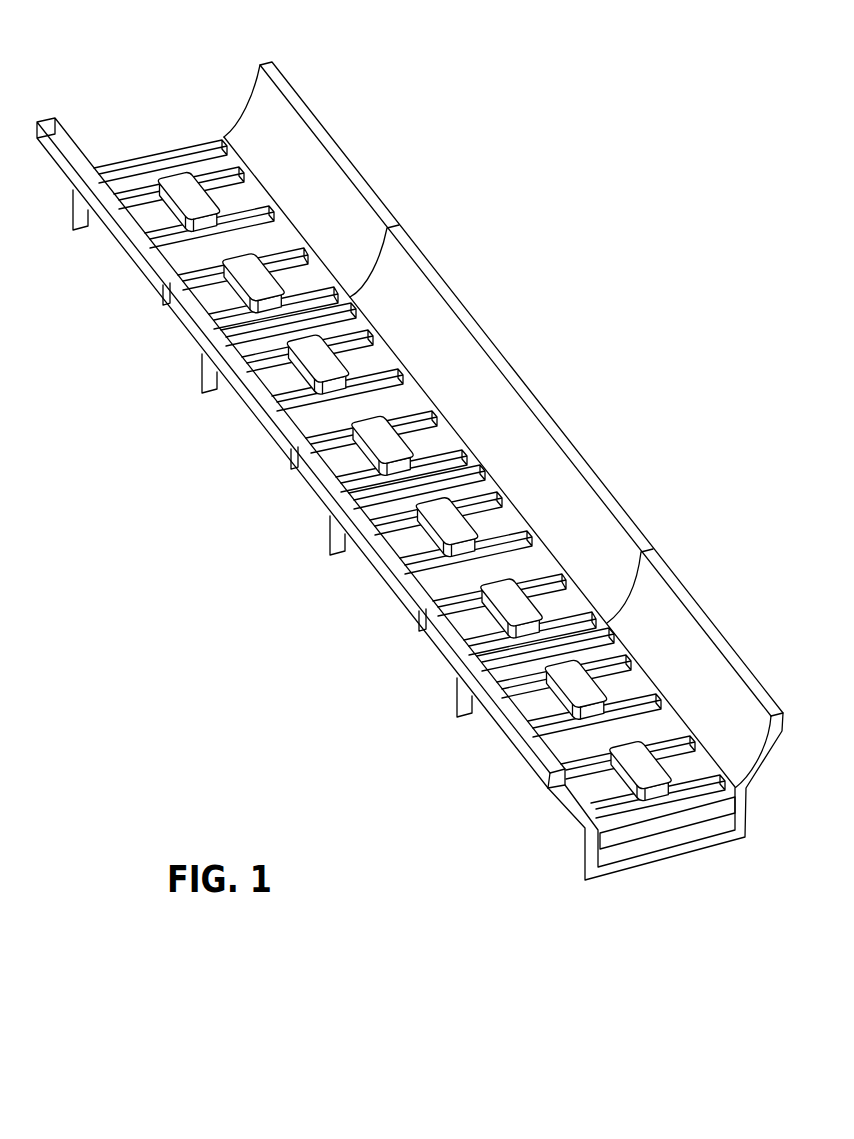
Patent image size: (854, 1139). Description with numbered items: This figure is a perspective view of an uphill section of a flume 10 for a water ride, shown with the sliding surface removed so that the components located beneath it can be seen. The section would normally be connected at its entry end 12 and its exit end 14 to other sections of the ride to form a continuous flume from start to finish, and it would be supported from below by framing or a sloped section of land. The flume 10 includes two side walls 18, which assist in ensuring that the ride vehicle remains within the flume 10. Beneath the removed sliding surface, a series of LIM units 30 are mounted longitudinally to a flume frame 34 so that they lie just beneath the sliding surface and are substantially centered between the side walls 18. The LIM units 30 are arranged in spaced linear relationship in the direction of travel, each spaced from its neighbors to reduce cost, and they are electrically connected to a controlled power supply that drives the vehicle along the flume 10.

The flume 10 is at (410, 499).
The entry end 12 is at (676, 866).
The exit end 14 is at (157, 127).
The side walls 18 is at (410, 416).
The LIM units 30 is at (452, 524).
The flume frame 34 is at (633, 698).